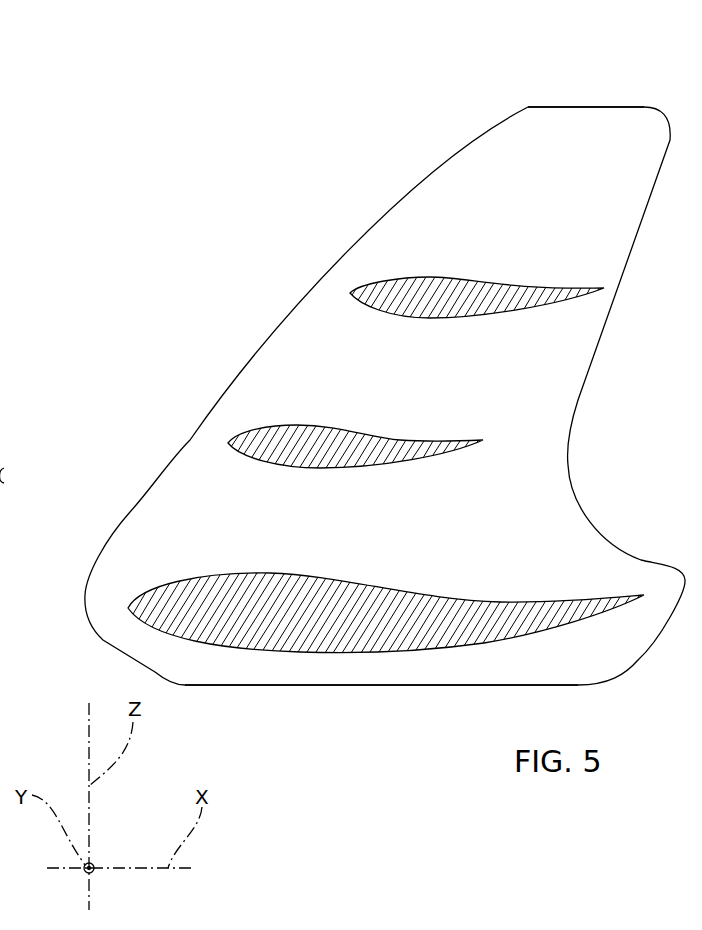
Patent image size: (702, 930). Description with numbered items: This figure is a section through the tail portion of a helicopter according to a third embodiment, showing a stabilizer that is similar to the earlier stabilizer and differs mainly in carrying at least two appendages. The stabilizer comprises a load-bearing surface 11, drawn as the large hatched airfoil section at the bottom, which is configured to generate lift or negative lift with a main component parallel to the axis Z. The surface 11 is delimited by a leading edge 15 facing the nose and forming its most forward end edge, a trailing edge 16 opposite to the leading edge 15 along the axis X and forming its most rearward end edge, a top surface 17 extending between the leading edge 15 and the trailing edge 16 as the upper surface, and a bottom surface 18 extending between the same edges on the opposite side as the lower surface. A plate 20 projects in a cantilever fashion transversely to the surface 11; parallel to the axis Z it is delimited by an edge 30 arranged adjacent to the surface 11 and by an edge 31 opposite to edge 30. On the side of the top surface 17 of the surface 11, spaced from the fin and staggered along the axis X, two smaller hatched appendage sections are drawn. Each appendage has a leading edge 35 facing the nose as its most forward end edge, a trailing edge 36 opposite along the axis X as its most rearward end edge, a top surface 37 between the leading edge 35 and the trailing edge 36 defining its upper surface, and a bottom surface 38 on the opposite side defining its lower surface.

The load-bearing surface 11 is at (484, 573).
The leading edge 15 is at (122, 608).
The trailing edge 16 is at (644, 590).
The top surface 17 is at (349, 570).
The bottom surface 18 is at (340, 656).
The plate 20 is at (491, 160).
The edge 30 is at (277, 688).
The edge 31 is at (621, 107).
The leading edge 35 is at (347, 293).
The trailing edge 36 is at (606, 288).
The top surface 37 is at (441, 277).
The bottom surface 38 is at (438, 320).